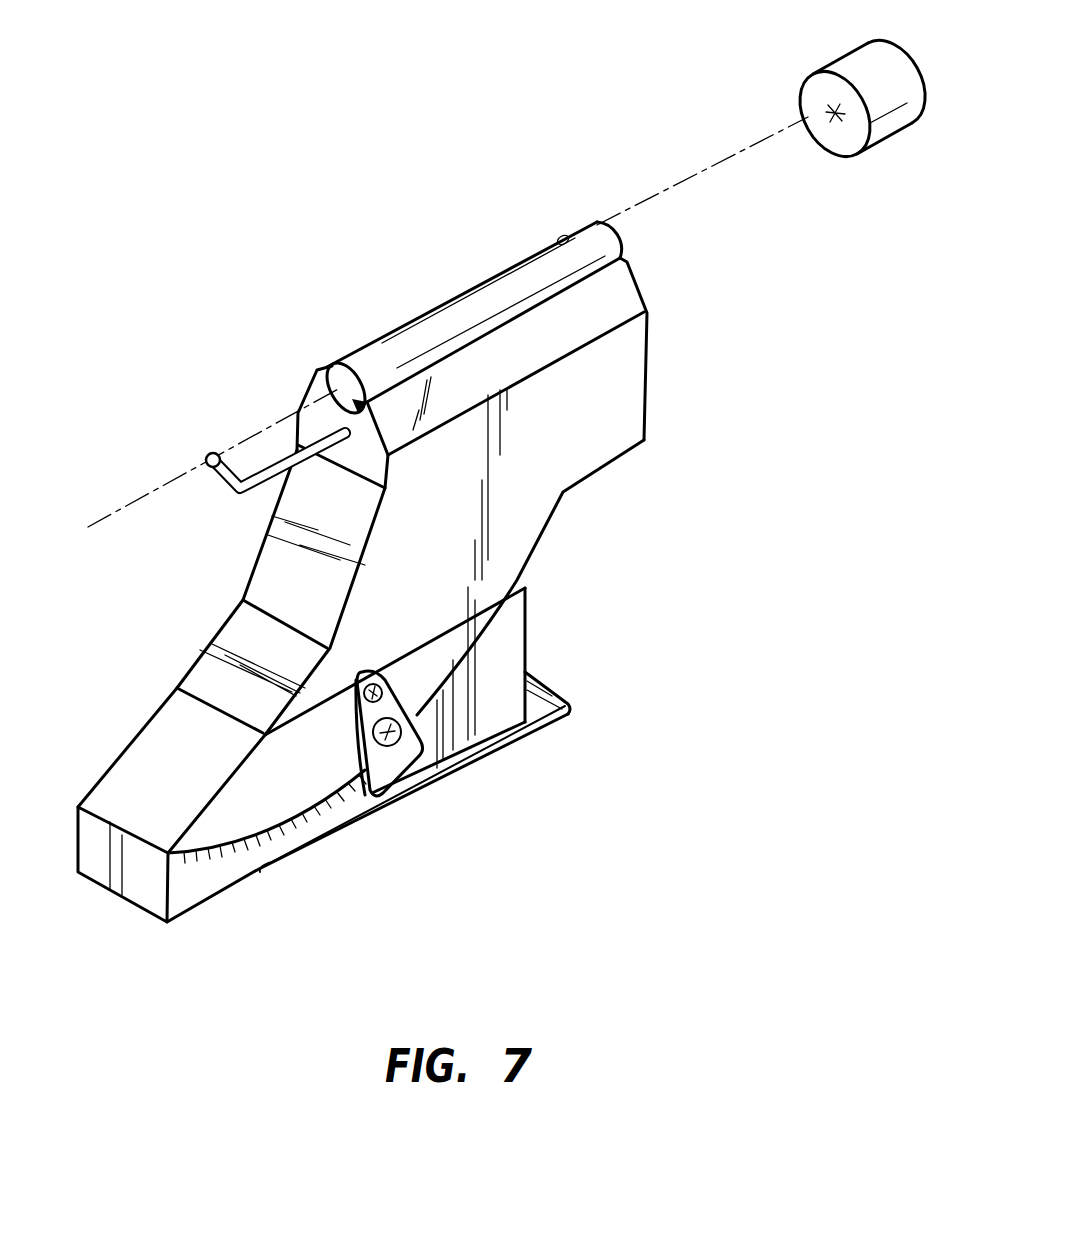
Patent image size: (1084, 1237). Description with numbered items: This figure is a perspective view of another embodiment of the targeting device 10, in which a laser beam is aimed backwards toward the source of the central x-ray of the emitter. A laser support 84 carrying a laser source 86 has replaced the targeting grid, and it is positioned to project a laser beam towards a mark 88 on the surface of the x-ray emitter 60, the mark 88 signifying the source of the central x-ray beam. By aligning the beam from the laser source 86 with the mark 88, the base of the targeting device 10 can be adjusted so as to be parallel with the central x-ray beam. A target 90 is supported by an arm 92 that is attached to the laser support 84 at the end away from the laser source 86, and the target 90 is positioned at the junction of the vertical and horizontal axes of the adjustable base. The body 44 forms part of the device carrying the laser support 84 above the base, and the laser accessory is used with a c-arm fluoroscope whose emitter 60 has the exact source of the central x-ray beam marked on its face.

The targeting device 10 is at (548, 824).
The body 44 is at (587, 450).
The x-ray emitter 60 is at (857, 64).
The laser support 84 is at (527, 321).
The laser source 86 is at (527, 256).
The mark 88 is at (838, 130).
The target 90 is at (247, 470).
The arm 92 is at (233, 492).